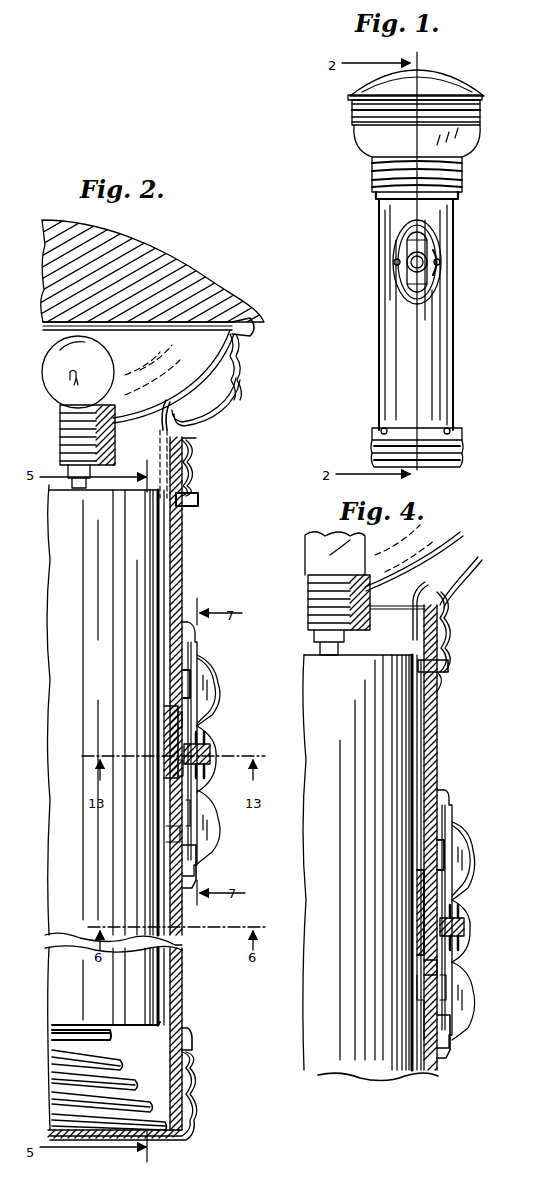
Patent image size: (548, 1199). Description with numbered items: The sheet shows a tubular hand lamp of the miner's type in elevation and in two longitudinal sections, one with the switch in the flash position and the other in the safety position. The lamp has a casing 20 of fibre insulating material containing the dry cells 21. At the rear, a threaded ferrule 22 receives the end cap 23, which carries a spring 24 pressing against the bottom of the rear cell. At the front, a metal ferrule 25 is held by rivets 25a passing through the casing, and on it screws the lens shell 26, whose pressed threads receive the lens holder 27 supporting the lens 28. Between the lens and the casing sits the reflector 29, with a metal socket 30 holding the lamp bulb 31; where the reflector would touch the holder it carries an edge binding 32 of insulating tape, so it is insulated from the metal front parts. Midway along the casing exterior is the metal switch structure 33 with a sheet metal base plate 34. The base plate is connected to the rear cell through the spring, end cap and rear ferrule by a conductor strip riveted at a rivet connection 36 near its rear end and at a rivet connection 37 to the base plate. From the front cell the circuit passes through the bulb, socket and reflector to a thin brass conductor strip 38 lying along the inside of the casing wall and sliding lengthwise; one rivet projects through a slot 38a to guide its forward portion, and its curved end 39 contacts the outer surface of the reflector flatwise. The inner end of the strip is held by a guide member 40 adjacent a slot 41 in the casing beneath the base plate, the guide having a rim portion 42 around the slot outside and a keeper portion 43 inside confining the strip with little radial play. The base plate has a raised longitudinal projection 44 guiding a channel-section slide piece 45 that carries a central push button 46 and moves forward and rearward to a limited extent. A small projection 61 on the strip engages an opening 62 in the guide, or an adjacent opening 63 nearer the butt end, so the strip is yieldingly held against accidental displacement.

In FIG. 1, the casing 20 is at (455, 237).
In FIG. 2, the casing 20 is at (184, 565).
In FIG. 4, the casing 20 is at (438, 710).
In FIG. 2, the dry cells 21 is at (113, 807).
In FIG. 4, the dry cells 21 is at (370, 868).
In FIG. 1, the threaded ferrule 22 is at (452, 432).
In FIG. 2, the threaded ferrule 22 is at (193, 1034).
In FIG. 1, the end cap 23 is at (460, 452).
In FIG. 2, the end cap 23 is at (196, 1078).
In FIG. 2, the spring 24 is at (125, 1056).
In FIG. 1, the metal ferrule 25 is at (458, 194).
In FIG. 2, the metal ferrule 25 is at (197, 460).
In FIG. 4, the metal ferrule 25 is at (447, 637).
In FIG. 1, the rivets 25a is at (454, 200).
In FIG. 2, the rivets 25a is at (200, 498).
In FIG. 4, the rivets 25a is at (450, 665).
In FIG. 1, the lens shell 26 is at (463, 137).
In FIG. 2, the lens shell 26 is at (226, 412).
In FIG. 4, the lens shell 26 is at (480, 570).
In FIG. 1, the lens holder 27 is at (472, 111).
In FIG. 2, the lens holder 27 is at (243, 352).
In FIG. 1, the lens 28 is at (452, 86).
In FIG. 2, the lens 28 is at (185, 265).
In FIG. 2, the reflector 29 is at (196, 366).
In FIG. 4, the reflector 29 is at (458, 542).
In FIG. 2, the metal socket 30 is at (113, 454).
In FIG. 4, the metal socket 30 is at (370, 624).
In FIG. 2, the lamp bulb 31 is at (64, 362).
In FIG. 4, the lamp bulb 31 is at (318, 538).
In FIG. 2, the edge binding 32 is at (250, 332).
In FIG. 1, the switch structure 33 is at (415, 255).
In FIG. 2, the switch structure 33 is at (227, 690).
In FIG. 4, the switch structure 33 is at (483, 861).
In FIG. 1, the base plate 34 is at (396, 249).
In FIG. 2, the base plate 34 is at (198, 866).
In FIG. 4, the base plate 34 is at (452, 1044).
In FIG. 1, the rivet connection 36 is at (380, 431).
In FIG. 1, the rivet connection 37 is at (395, 264).
In FIG. 2, the conductor strip 38 is at (172, 592).
In FIG. 4, the conductor strip 38 is at (438, 745).
In FIG. 4, the slot 38a is at (440, 694).
In FIG. 2, the curved end 39 is at (188, 416).
In FIG. 4, the curved end 39 is at (445, 592).
In FIG. 2, the guide member 40 is at (172, 830).
In FIG. 2, the slot 41 is at (192, 836).
In FIG. 4, the slot 41 is at (448, 996).
In FIG. 2, the rim portion 42 is at (186, 684).
In FIG. 4, the rim portion 42 is at (440, 852).
In FIG. 2, the keeper portion 43 is at (166, 745).
In FIG. 1, the longitudinal projection 44 is at (428, 289).
In FIG. 2, the longitudinal projection 44 is at (198, 648).
In FIG. 4, the longitudinal projection 44 is at (453, 822).
In FIG. 1, the slide piece 45 is at (436, 253).
In FIG. 2, the slide piece 45 is at (214, 712).
In FIG. 4, the slide piece 45 is at (470, 893).
In FIG. 1, the push button 46 is at (428, 271).
In FIG. 2, the push button 46 is at (210, 746).
In FIG. 4, the push button 46 is at (466, 938).
In FIG. 4, the projection 61 is at (416, 990).
In FIG. 4, the opening 62 is at (420, 965).
In FIG. 4, the opening 63 is at (418, 980).